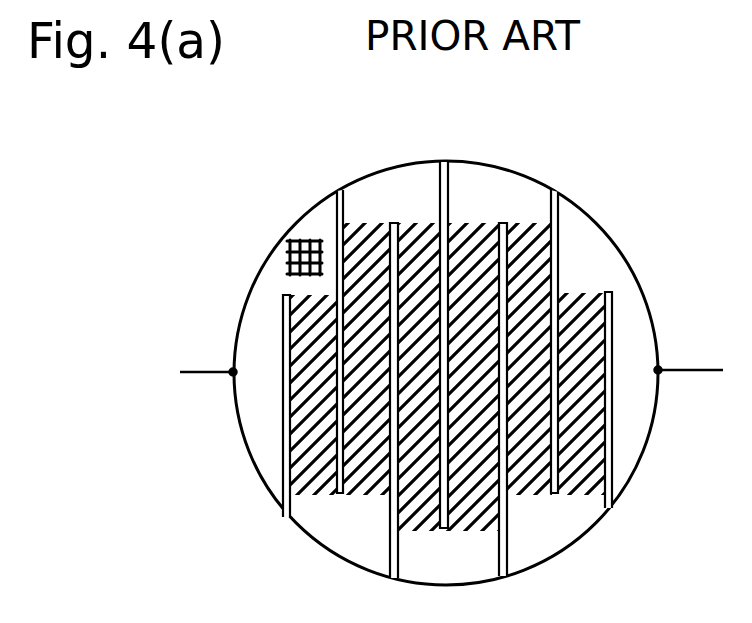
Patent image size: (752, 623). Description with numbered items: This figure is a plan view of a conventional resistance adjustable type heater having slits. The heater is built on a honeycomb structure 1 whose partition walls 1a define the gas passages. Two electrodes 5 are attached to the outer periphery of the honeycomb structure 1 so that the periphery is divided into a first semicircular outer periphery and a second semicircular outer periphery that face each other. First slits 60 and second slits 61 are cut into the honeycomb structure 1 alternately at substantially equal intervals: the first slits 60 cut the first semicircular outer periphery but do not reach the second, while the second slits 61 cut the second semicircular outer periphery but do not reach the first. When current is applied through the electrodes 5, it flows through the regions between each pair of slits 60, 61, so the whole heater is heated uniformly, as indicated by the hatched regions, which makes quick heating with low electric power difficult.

The honeycomb structure 1 is at (612, 233).
The partition walls 1a is at (285, 255).
The electrodes 5 is at (200, 368).
The first slits 60 is at (290, 483).
The second slits 61 is at (330, 213).